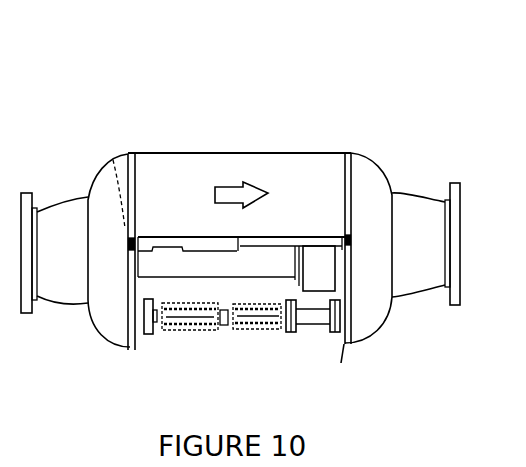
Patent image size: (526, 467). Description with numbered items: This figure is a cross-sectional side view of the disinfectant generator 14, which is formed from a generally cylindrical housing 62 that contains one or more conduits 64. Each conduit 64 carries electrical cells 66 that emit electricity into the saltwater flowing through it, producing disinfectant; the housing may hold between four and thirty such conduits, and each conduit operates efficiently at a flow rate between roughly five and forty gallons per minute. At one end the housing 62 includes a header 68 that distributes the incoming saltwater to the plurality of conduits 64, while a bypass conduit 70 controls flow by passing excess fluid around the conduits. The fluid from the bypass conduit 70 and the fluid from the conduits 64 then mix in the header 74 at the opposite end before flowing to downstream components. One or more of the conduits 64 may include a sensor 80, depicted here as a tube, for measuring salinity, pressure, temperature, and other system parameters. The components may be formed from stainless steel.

The disinfectant generator 14 is at (181, 78).
The housing 62 is at (296, 152).
The header 68 is at (381, 165).
The header 74 is at (97, 170).
The bypass conduit 70 is at (158, 267).
The conduit 64 is at (141, 343).
The electrical cell 66 is at (208, 326).
The sensor 80 is at (291, 332).